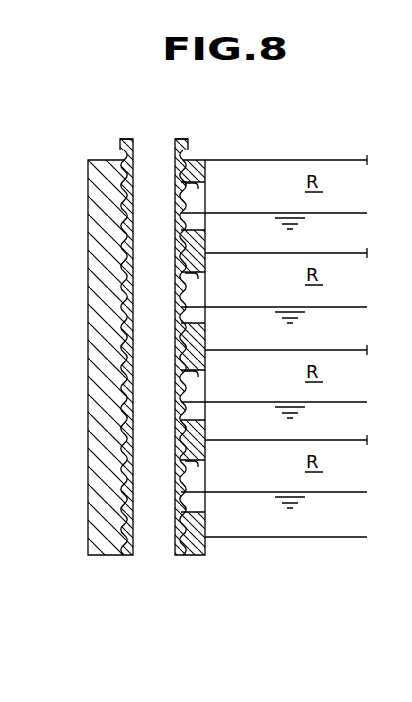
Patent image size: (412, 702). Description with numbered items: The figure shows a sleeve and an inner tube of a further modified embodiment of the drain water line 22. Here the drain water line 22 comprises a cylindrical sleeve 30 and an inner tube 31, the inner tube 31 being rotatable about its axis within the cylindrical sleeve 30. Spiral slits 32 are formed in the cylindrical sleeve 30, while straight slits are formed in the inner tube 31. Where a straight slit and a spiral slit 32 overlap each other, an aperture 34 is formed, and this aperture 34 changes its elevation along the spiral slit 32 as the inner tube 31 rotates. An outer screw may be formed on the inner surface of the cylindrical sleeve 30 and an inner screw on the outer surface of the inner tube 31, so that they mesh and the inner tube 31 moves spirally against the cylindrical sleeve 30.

The drain water line 22 is at (115, 139).
The cylindrical sleeve 30 is at (105, 306).
The inner tube 31 is at (179, 141).
The spiral slit 32 is at (177, 208).
The aperture 34 is at (198, 189).